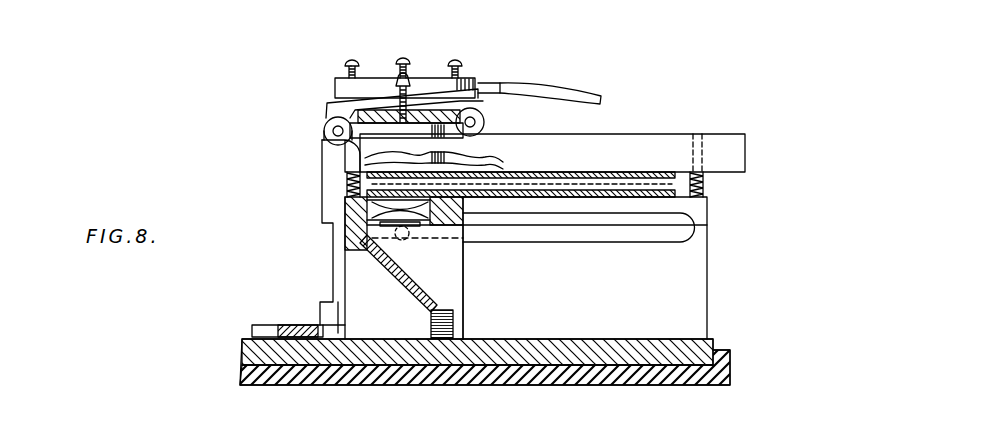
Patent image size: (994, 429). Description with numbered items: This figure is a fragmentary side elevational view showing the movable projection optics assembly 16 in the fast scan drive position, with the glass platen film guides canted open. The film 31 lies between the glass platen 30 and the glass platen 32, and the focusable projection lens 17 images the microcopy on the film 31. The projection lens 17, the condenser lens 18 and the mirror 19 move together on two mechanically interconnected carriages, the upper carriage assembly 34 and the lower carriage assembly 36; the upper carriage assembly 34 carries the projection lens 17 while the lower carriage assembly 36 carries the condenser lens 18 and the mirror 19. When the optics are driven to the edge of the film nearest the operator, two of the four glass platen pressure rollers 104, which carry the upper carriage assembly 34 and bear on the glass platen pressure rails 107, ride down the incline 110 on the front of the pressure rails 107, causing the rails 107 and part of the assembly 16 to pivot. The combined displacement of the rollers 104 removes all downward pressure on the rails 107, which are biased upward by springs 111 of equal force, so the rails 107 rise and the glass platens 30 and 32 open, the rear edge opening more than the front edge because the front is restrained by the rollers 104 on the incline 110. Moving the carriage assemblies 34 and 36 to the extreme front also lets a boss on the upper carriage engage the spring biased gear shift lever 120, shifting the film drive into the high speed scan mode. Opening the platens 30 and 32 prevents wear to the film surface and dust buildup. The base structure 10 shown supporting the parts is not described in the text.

The base plate 10 is at (690, 387).
The movable projection optics assembly 16 is at (328, 102).
The projection lens 17 is at (470, 158).
The condenser lens 18 is at (424, 232).
The mirror 19 is at (463, 287).
The glass platen 30 is at (688, 198).
The film 31 is at (646, 183).
The glass platen 32 is at (567, 173).
The upper carriage assembly 34 is at (424, 116).
The lower carriage assembly 36 is at (454, 318).
The glass platen pressure rollers 104 is at (324, 131).
The glass platen pressure rails 107 is at (584, 134).
The incline 110 is at (353, 152).
The springs 111 is at (349, 185).
The gear shift lever 120 is at (290, 325).